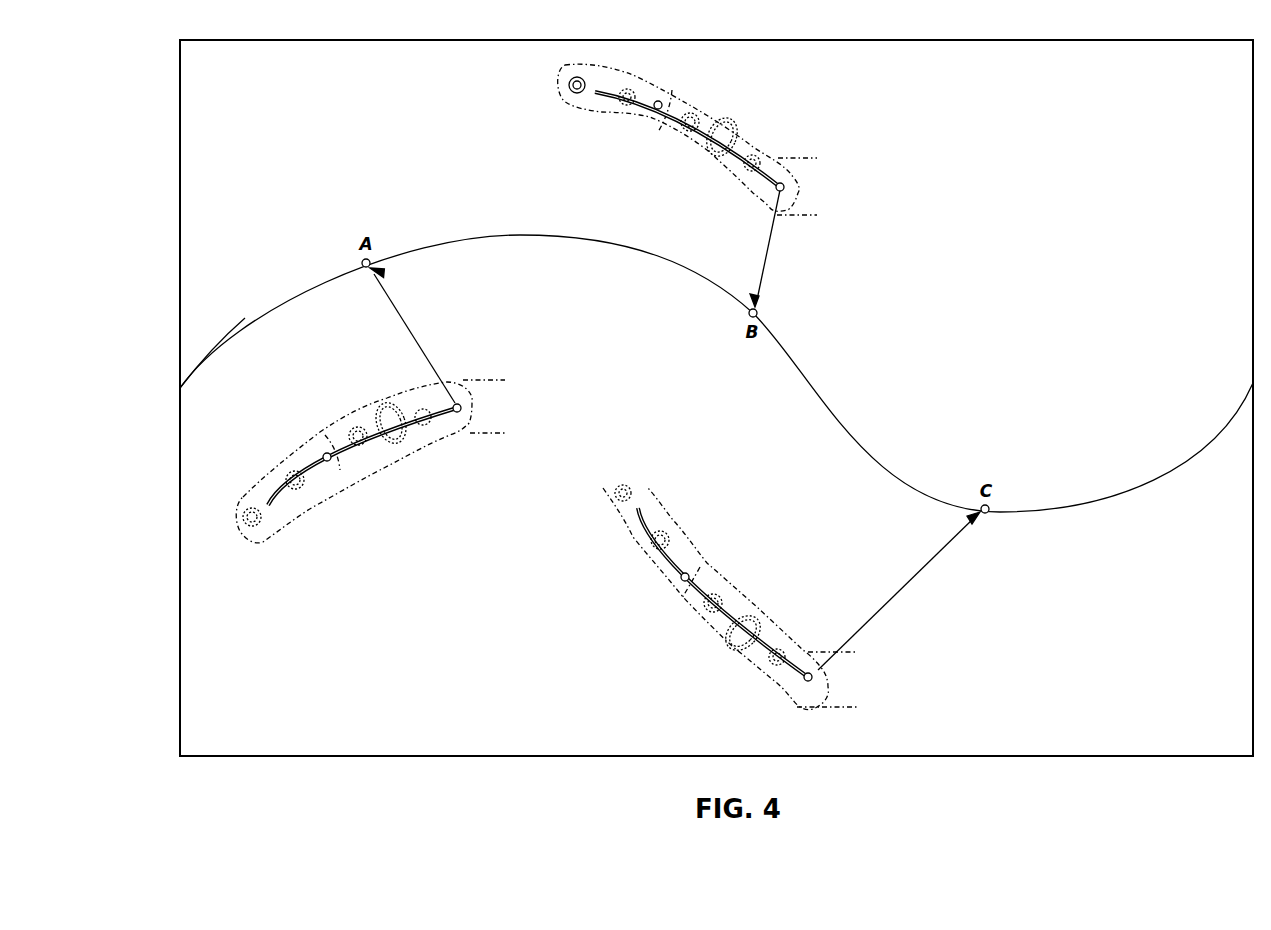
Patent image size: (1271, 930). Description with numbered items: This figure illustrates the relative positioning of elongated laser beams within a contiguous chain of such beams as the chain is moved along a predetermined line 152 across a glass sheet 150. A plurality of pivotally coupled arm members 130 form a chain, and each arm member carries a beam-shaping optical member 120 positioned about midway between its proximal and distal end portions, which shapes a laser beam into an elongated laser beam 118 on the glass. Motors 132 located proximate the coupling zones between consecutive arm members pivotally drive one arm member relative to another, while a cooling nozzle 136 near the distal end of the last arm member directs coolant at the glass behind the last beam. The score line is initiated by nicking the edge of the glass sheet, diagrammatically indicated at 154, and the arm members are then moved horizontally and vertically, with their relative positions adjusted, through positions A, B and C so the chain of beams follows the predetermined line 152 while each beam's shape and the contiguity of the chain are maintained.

The elongated laser beam 118 is at (287, 492).
The beam-shaping optical member 120 is at (355, 428).
The arm member 130 is at (293, 458).
The motor 132 is at (403, 445).
The cooling nozzle 136 is at (245, 522).
The glass sheet 150 is at (1153, 757).
The predetermined line 152 is at (465, 236).
The nicked edge portion 154 is at (180, 388).